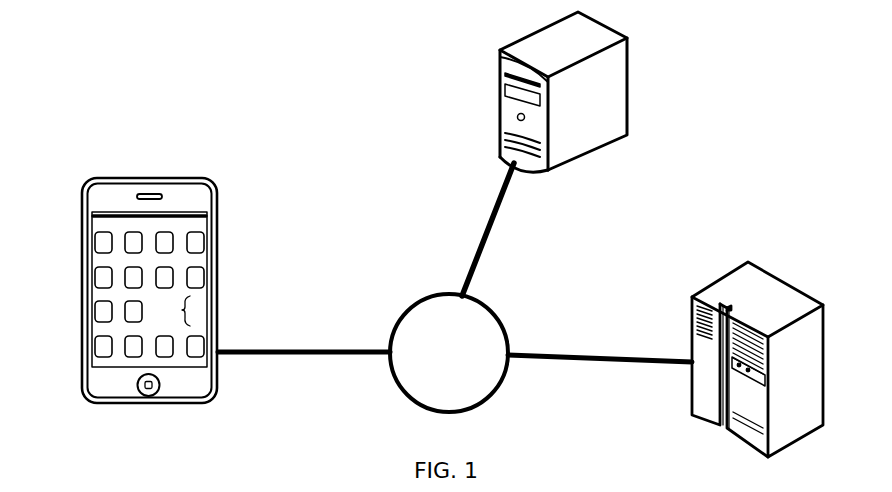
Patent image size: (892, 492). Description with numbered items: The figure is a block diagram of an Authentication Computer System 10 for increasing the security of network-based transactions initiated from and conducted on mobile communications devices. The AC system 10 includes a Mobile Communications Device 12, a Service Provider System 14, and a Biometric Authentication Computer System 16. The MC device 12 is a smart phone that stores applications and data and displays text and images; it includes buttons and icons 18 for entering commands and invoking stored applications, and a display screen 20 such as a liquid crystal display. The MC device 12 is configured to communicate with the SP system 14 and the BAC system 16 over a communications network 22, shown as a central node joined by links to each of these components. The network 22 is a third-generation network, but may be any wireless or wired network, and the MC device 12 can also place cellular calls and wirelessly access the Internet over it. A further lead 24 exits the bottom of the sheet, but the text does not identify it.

The Authentication Computer (AC) System 10 is at (108, 83).
The Mobile Communications (MC) Device 12 is at (145, 178).
The Service Provider (SP) System 14 is at (500, 80).
The Biometric Authentication Computer (BAC) System 16 is at (748, 262).
The buttons and icons 18 is at (103, 242).
The display screen 20 is at (188, 310).
The communications network 22 is at (421, 297).
The connection lead 24 is at (75, 491).